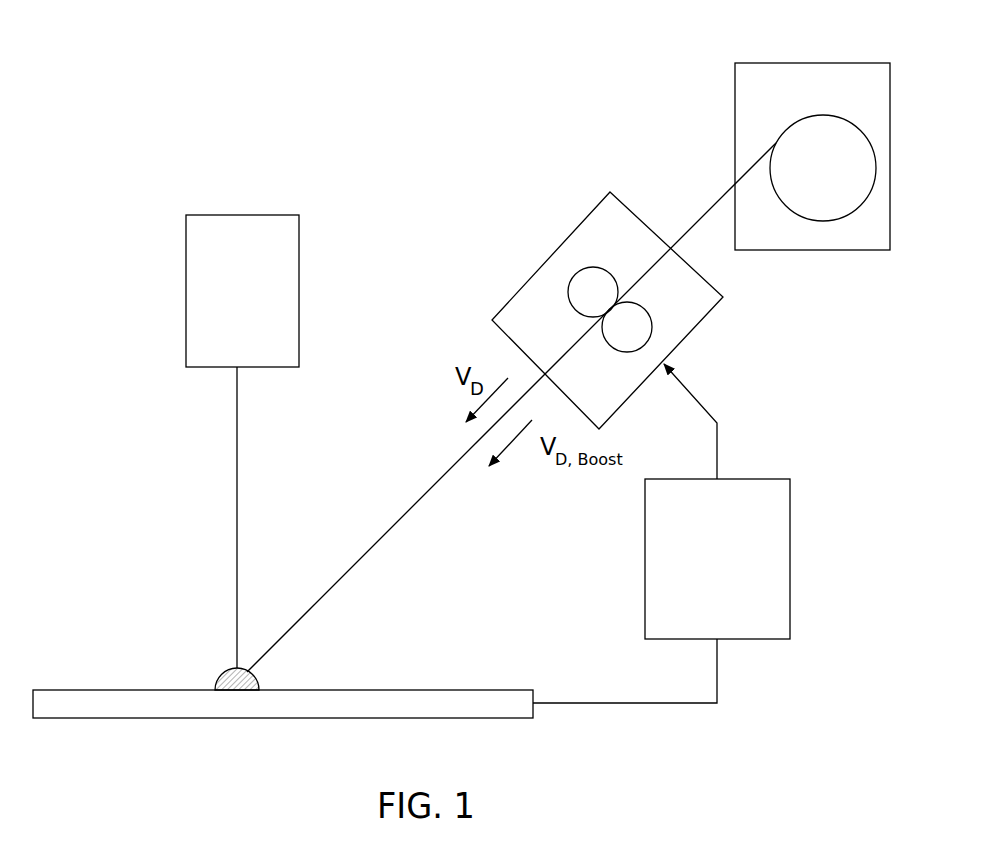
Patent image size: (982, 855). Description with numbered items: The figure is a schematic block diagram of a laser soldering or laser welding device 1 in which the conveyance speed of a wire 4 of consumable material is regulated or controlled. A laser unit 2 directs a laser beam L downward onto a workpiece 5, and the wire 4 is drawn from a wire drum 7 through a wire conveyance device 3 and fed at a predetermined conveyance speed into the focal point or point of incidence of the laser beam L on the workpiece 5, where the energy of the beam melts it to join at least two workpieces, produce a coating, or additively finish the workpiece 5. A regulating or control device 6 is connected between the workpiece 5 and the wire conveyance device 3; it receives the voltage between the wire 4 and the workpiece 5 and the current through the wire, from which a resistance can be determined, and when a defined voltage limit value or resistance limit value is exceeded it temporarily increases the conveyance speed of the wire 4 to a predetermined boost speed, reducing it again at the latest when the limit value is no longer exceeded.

The laser soldering or laser welding device 1 is at (114, 216).
The laser unit 2 is at (185, 291).
The wire conveyance device 3 is at (548, 257).
The wire of consumable material 4 is at (330, 592).
The workpiece 5 is at (52, 705).
The regulating or control device 6 is at (790, 560).
The wire drum 7 is at (813, 75).
The laser beam L is at (235, 520).